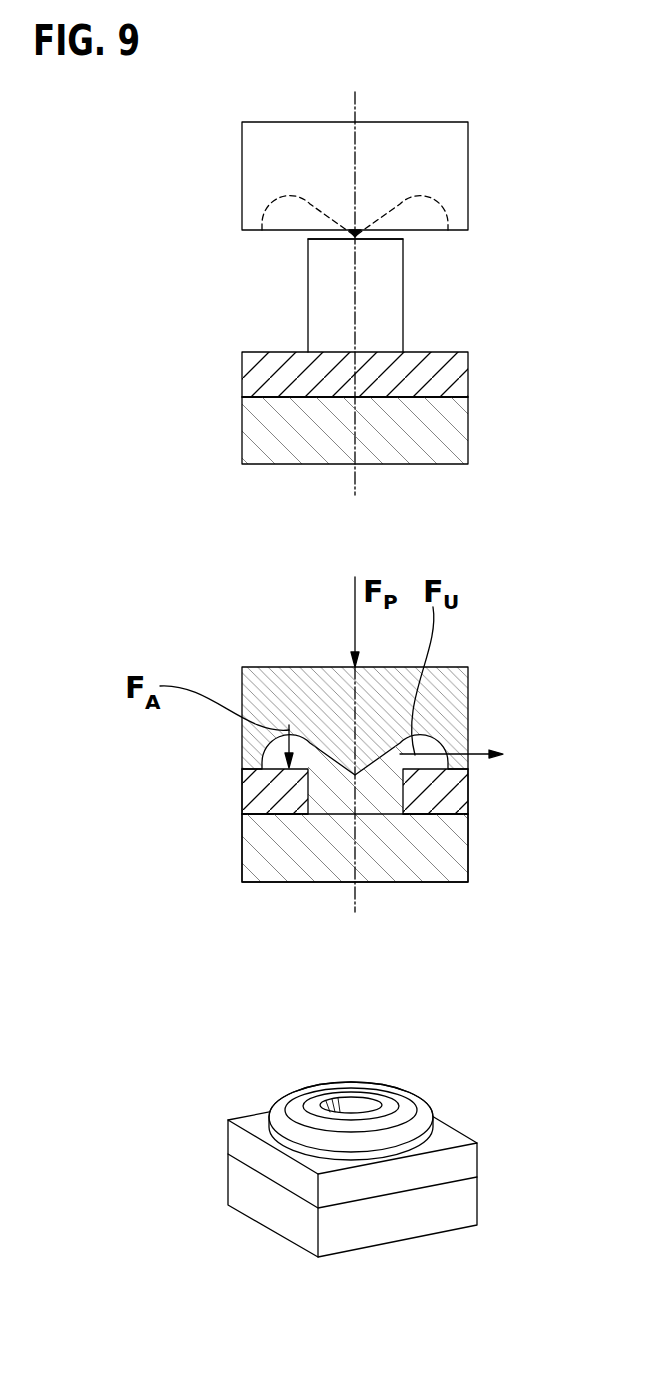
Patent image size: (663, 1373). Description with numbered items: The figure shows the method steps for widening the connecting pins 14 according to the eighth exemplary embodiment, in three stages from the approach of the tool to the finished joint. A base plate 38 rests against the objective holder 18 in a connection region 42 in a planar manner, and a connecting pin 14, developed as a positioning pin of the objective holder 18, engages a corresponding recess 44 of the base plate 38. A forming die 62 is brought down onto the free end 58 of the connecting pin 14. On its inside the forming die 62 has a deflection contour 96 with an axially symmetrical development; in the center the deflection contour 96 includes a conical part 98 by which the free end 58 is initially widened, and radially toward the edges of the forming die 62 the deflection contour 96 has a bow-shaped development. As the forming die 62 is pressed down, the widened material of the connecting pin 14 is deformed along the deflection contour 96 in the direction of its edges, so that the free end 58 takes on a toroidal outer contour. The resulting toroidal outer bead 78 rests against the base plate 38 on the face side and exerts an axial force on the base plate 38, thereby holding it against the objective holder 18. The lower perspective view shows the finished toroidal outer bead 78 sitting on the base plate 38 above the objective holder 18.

The connecting pin 14 is at (315, 303).
The objective holder 18 is at (257, 433).
The base plate 38 is at (447, 373).
The connection region 42 is at (450, 392).
The recess 44 is at (395, 792).
The free end 58 is at (395, 236).
The forming die 62 is at (268, 147).
The toroidal outer bead 78 is at (397, 1092).
The deflection contour 96 is at (267, 219).
The conical part 98 is at (327, 212).